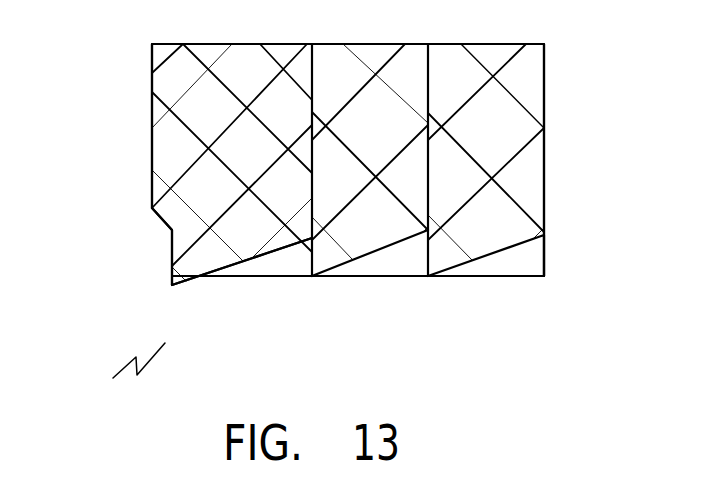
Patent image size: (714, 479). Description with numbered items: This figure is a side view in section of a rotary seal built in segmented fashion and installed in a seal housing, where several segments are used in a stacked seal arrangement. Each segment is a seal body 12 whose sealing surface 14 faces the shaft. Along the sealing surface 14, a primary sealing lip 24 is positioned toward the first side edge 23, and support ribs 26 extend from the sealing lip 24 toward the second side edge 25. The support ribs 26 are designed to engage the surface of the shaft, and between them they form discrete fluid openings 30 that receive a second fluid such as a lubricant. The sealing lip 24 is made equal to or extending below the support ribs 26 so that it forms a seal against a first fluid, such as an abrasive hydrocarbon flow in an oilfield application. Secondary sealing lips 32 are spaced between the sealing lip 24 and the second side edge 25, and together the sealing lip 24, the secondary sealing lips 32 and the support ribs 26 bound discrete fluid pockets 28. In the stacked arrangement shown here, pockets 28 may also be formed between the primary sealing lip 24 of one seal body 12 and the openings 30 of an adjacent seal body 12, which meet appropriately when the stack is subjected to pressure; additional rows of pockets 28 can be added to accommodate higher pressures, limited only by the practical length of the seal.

The seal body 12 is at (187, 66).
The sealing surface 14 is at (123, 369).
The first side edge 23 is at (151, 146).
The sealing lip 24 is at (173, 280).
The second side edge 25 is at (545, 145).
The support ribs 26 is at (545, 250).
The fluid pockets 28 is at (283, 258).
The fluid openings 30 is at (527, 263).
The secondary sealing lips 32 is at (313, 276).